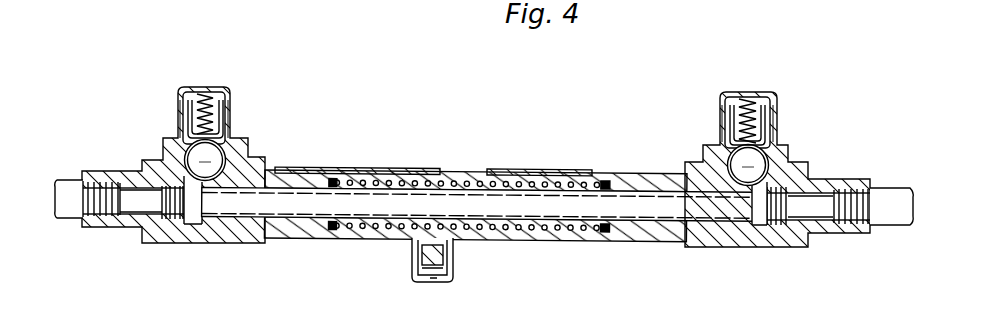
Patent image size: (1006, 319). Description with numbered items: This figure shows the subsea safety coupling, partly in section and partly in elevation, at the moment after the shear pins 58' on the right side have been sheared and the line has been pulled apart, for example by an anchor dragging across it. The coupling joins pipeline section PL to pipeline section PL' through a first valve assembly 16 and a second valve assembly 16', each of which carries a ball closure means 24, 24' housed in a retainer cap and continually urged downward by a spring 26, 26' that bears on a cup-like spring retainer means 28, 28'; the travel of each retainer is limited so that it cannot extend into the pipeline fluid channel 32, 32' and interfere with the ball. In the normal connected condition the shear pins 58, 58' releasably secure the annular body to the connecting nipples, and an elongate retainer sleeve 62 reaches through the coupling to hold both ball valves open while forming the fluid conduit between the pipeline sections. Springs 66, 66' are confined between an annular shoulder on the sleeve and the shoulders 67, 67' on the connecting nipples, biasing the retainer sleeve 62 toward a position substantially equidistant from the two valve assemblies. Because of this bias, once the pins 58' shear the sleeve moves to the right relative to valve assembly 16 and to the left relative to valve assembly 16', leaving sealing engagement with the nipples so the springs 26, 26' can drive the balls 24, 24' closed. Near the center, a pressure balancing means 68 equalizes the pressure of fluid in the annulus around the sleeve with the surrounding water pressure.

The valve assembly 16 is at (173, 144).
The valve assembly 16' is at (777, 148).
The ball closure means 24 is at (205, 160).
The ball valve 24' is at (748, 165).
The spring 26 is at (198, 89).
The spring 26' is at (738, 97).
The spring retainer means 28 is at (233, 119).
The spring retainer means 28' is at (716, 125).
The pipeline fluid channel 32 is at (187, 223).
The pipeline fluid channel 32' is at (754, 228).
The shear pins 58 is at (357, 147).
The shear pins 58' is at (539, 154).
The retainer sleeve 62 is at (402, 190).
The spring 66 is at (402, 180).
The spring 66' is at (538, 185).
The shoulder 67 is at (339, 186).
The shoulder 67' is at (614, 189).
The pressure balancing means 68 is at (408, 267).
The pipeline section PL is at (120, 173).
The pipeline section PL' is at (840, 188).